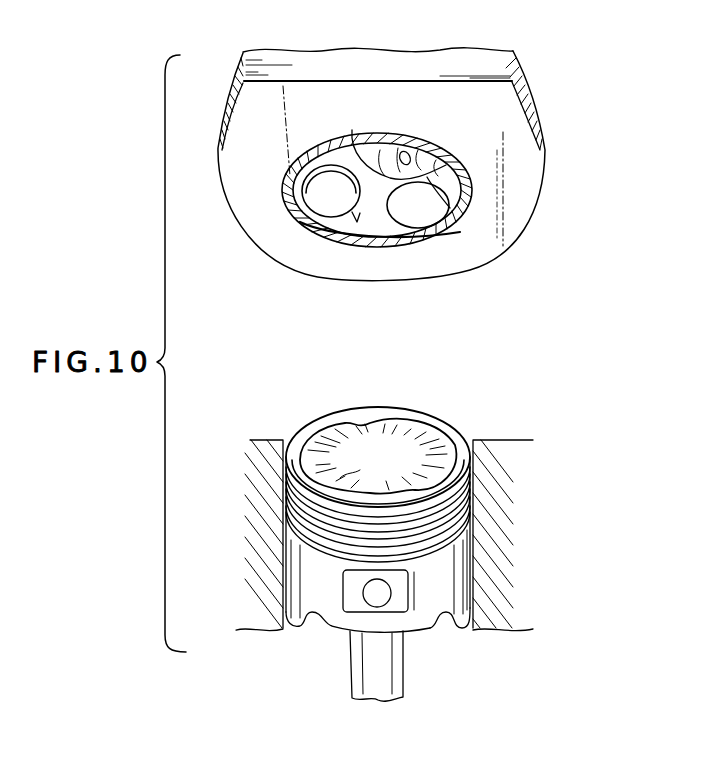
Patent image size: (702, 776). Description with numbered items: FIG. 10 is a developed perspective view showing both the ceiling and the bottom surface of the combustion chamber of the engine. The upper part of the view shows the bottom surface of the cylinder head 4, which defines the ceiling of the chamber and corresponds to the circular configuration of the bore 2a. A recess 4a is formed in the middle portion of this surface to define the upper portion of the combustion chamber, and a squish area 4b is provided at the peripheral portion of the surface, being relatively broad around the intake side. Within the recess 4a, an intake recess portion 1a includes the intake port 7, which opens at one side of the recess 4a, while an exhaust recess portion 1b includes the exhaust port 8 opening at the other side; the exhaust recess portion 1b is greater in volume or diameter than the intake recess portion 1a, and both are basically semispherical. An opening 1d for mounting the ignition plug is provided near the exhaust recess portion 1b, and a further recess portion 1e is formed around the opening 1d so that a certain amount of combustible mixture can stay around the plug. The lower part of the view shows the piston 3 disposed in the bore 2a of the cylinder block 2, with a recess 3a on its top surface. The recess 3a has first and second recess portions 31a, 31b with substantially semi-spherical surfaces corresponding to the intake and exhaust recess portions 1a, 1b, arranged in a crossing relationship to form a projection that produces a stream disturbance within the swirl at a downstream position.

The intake recess portion 1a is at (358, 223).
The exhaust recess portion 1b is at (450, 208).
The opening 1d is at (411, 158).
The further recess portion 1e is at (352, 160).
The cylinder block 2 is at (507, 452).
The bore 2a is at (473, 588).
The piston 3 is at (463, 566).
The recess 3a is at (378, 428).
The first recess portion 31a is at (312, 435).
The second recess portion 31b is at (422, 440).
The cylinder head 4 is at (458, 66).
The recess 4a is at (455, 183).
The squish area 4b is at (386, 238).
The intake port 7 is at (325, 207).
The exhaust port 8 is at (443, 207).